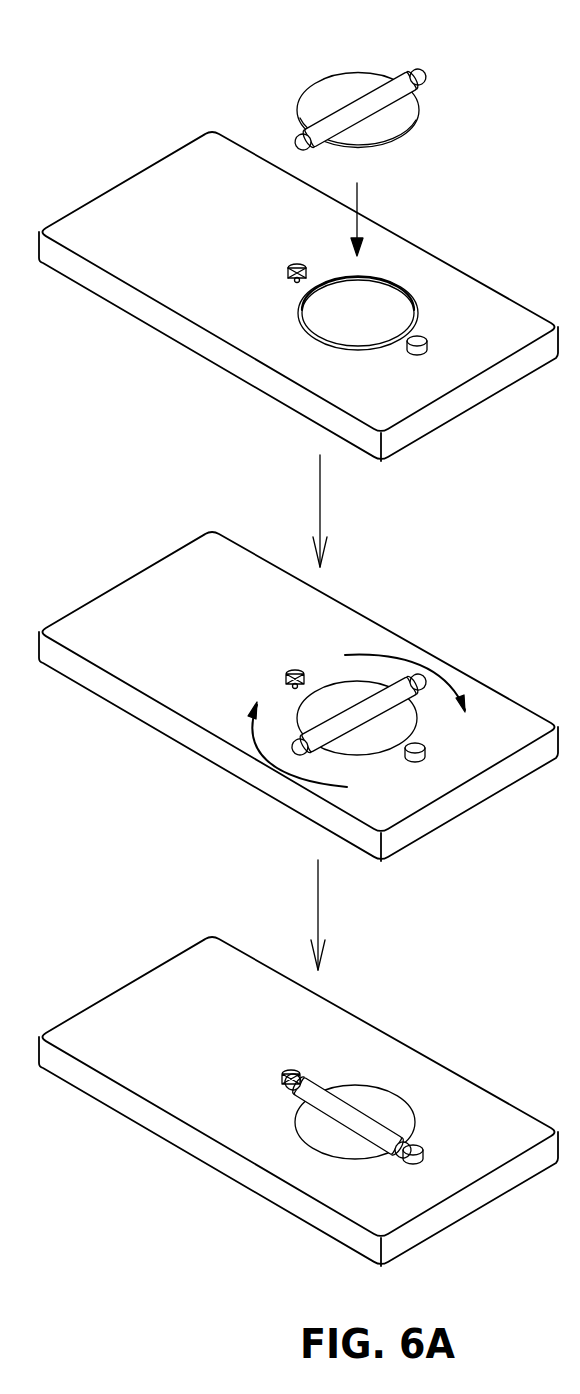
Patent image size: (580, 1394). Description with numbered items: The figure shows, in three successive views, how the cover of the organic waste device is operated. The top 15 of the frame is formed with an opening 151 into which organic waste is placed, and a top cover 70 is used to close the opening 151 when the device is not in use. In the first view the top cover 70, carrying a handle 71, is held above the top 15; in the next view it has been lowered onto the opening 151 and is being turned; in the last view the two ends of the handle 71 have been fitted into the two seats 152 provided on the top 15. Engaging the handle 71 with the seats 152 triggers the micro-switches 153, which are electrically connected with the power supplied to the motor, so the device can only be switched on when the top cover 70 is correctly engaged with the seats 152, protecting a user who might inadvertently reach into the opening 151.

The top 15 is at (500, 311).
The opening 151 is at (383, 302).
The seat 152 is at (297, 265).
The micro-switch 153 is at (297, 285).
The top cover 70 is at (410, 117).
The handle 71 is at (381, 91).